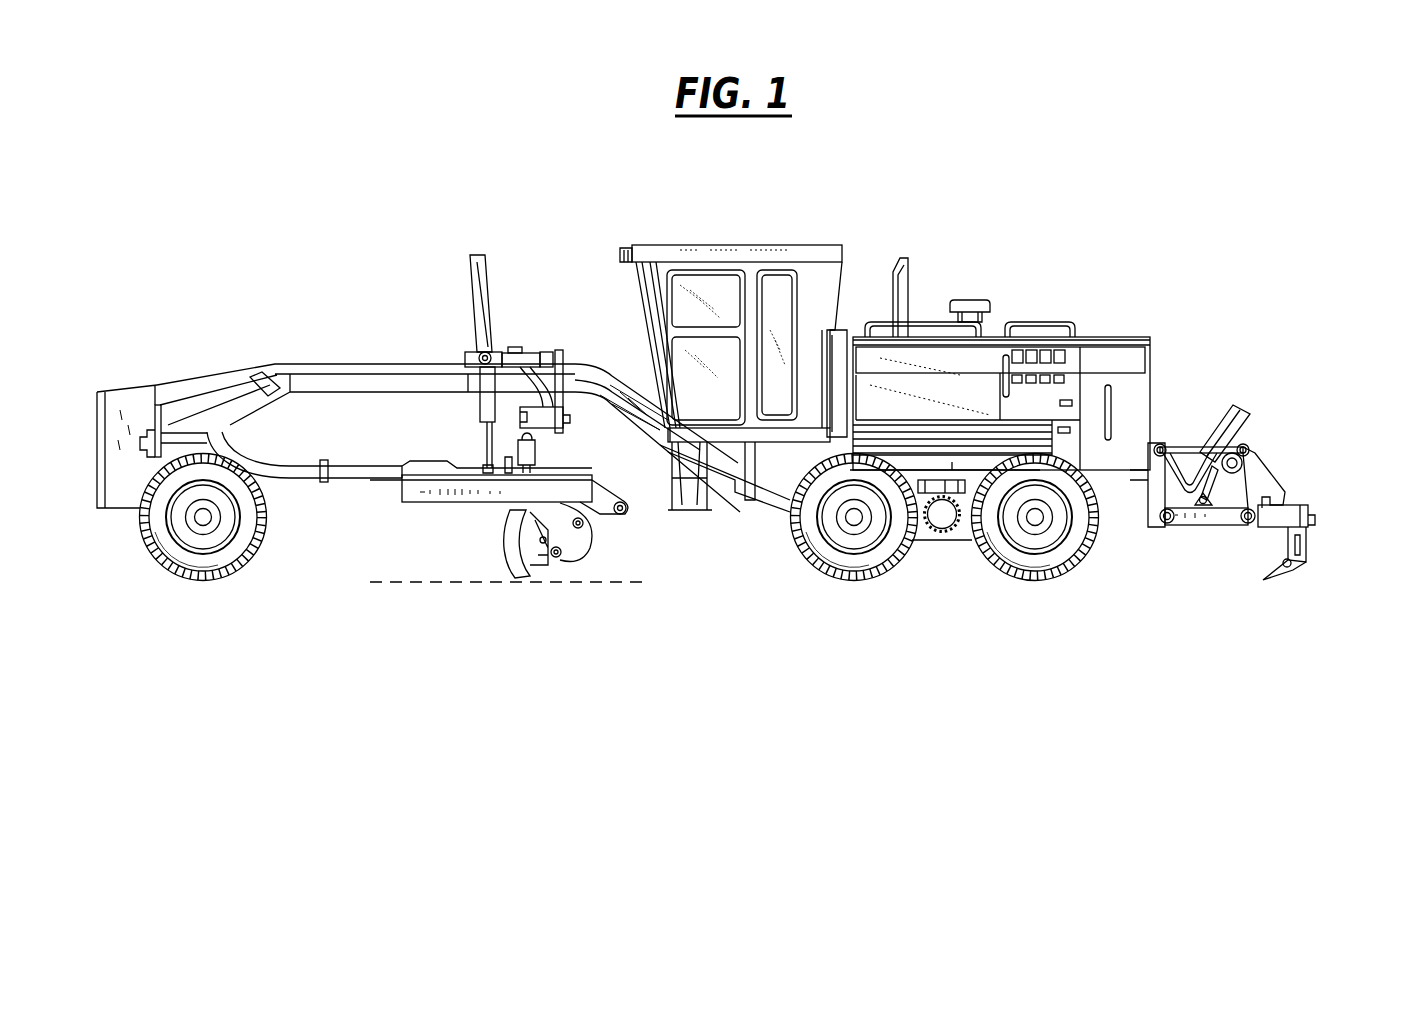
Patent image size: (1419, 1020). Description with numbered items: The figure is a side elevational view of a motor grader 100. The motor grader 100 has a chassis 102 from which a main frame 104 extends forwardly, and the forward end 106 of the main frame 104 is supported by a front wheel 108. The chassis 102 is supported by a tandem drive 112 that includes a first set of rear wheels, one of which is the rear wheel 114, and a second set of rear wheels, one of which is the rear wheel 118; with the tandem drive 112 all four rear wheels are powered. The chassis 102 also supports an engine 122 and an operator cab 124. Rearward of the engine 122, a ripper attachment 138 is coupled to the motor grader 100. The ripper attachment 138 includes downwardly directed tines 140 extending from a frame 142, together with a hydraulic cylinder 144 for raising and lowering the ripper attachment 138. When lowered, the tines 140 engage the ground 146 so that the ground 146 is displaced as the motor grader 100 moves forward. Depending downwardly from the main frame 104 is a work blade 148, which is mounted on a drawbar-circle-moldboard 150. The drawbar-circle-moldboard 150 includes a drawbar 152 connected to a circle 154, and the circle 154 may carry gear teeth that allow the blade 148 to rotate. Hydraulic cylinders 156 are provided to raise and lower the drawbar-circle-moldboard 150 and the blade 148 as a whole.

The motor grader 100 is at (904, 182).
The chassis 102 is at (935, 540).
The main frame 104 is at (595, 372).
The forward end 106 is at (132, 388).
The front wheel 108 is at (150, 566).
The tandem drive 112 is at (833, 624).
The rear wheel 114 is at (802, 560).
The rear wheel 118 is at (1050, 580).
The engine 122 is at (970, 390).
The operator cab 124 is at (727, 390).
The ripper attachment 138 is at (1210, 398).
The tines 140 is at (1305, 565).
The frame 142 is at (1283, 465).
The hydraulic cylinder 144 is at (1240, 426).
The ground 146 is at (415, 585).
The work blade 148 is at (512, 578).
The drawbar-circle-moldboard 150 is at (456, 437).
The drawbar 152 is at (545, 477).
The circle 154 is at (432, 466).
The hydraulic cylinders 156 is at (481, 272).